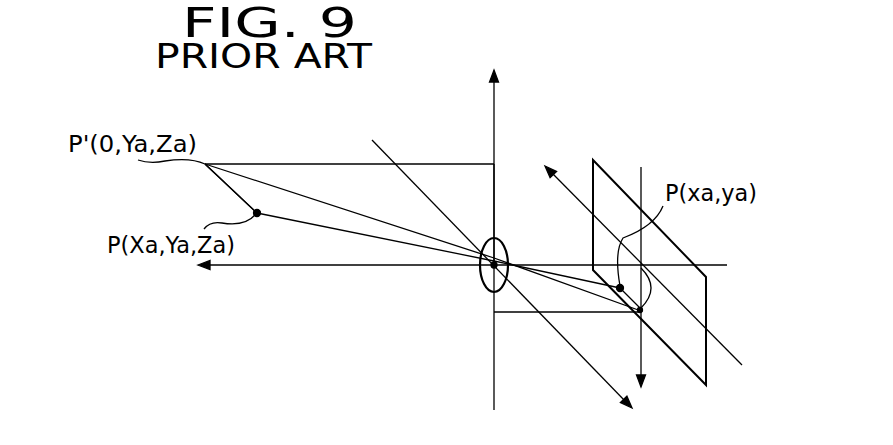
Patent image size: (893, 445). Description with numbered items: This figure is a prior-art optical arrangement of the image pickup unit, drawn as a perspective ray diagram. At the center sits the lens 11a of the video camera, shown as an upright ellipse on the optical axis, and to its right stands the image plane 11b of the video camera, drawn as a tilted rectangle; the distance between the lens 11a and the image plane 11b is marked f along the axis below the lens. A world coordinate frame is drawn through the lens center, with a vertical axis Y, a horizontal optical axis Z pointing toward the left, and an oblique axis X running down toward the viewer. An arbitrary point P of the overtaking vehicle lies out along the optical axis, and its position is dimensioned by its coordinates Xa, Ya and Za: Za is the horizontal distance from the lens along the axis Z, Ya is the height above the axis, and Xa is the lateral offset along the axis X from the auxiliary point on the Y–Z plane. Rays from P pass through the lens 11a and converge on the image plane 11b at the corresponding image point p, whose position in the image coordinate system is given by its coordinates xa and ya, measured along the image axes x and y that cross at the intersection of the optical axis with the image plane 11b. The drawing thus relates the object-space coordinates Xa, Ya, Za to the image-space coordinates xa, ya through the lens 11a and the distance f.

The lens 11a is at (468, 276).
The image plane 11b is at (608, 171).
The X axis of object coordinate system X is at (502, 288).
The Y axis of object coordinate system Y is at (493, 226).
The Z axis (optical axis) Z is at (462, 283).
The x axis of image coordinate system x is at (633, 253).
The y axis of image coordinate system y is at (648, 288).
The Z coordinate of point P Za is at (494, 164).
The Y coordinate of point P Ya is at (494, 164).
The X coordinate of point P Xa is at (256, 212).
The x coordinate of image point p xa is at (627, 291).
The y coordinate of image point p ya is at (655, 288).
The distance between the lens and the image plane f is at (494, 312).